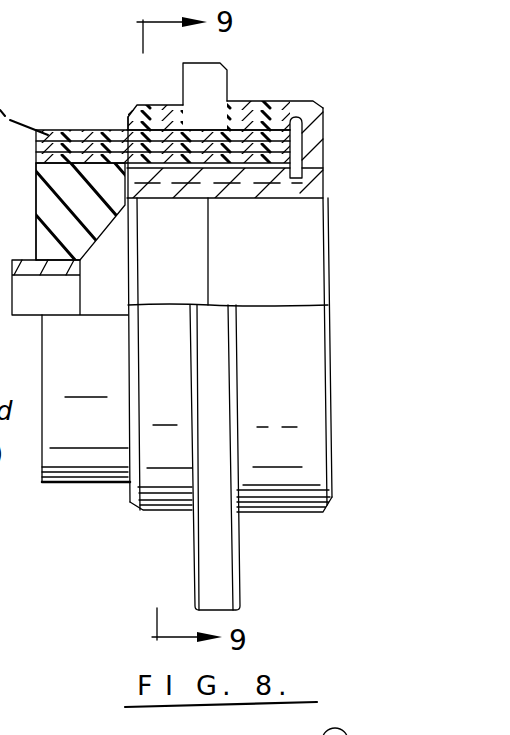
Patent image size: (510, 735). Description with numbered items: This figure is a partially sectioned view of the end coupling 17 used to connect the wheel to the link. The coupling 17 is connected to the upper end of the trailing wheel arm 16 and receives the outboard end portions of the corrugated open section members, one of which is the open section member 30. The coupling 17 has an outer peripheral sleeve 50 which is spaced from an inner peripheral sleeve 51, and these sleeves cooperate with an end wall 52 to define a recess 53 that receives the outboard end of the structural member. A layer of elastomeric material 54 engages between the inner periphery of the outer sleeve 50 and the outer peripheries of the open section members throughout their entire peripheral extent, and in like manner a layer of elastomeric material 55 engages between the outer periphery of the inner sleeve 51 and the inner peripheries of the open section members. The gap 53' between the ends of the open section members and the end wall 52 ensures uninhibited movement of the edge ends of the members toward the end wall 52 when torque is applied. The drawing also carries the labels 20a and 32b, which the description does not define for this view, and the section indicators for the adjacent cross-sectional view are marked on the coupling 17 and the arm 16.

The trailing wheel arm 16 is at (227, 552).
The coupling 17 is at (276, 478).
The side body portion 20a is at (55, 272).
The open section member 30 is at (60, 158).
The laminate layer 32b is at (105, 145).
The outer peripheral sleeve 50 is at (208, 102).
The inner peripheral sleeve 51 is at (227, 190).
The end wall 52 is at (297, 132).
The recess 53 is at (226, 95).
The gap 53' is at (340, 152).
The layer of elastomeric material 54 is at (282, 118).
The layer of elastomeric material 55 is at (293, 172).